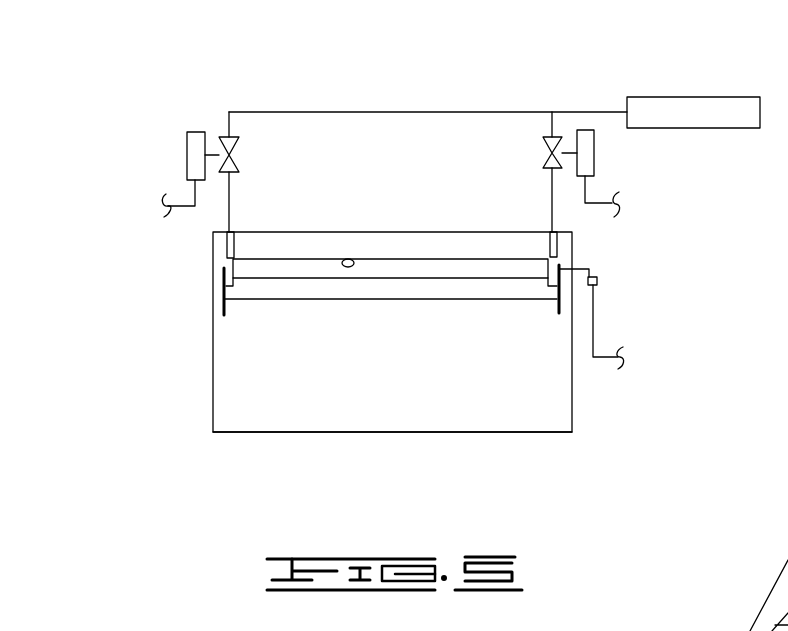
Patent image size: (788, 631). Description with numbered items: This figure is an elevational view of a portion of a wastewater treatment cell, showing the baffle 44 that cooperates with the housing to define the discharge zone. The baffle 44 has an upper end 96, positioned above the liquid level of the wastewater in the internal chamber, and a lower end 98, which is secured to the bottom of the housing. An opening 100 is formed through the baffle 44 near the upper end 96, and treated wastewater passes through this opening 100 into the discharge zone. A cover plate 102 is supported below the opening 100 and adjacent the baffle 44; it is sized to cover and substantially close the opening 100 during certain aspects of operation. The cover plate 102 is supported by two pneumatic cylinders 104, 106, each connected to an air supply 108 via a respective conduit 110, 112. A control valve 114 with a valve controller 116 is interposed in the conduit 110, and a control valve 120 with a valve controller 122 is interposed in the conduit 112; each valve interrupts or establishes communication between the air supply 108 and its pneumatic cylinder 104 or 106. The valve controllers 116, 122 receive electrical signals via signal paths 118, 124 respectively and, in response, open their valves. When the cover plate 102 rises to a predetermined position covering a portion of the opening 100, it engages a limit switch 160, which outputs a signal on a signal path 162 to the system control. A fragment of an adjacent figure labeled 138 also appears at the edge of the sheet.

The baffle 44 is at (533, 422).
The upper end 96 is at (303, 232).
The lower end 98 is at (409, 432).
The opening 100 is at (352, 258).
The cover plate 102 is at (395, 300).
The pneumatic cylinder 104 is at (557, 243).
The pneumatic cylinder 106 is at (226, 250).
The air supply 108 is at (697, 88).
The conduit 110 is at (552, 128).
The conduit 112 is at (296, 112).
The control valve 114 is at (545, 153).
The valve controller 116 is at (594, 155).
The signal path 118 is at (587, 193).
The control valve 120 is at (226, 137).
The valve controller 122 is at (187, 154).
The signal path 124 is at (178, 203).
The limit switch 160 is at (597, 283).
The signal path 162 is at (593, 345).
The adjacent figure line 138 is at (780, 590).